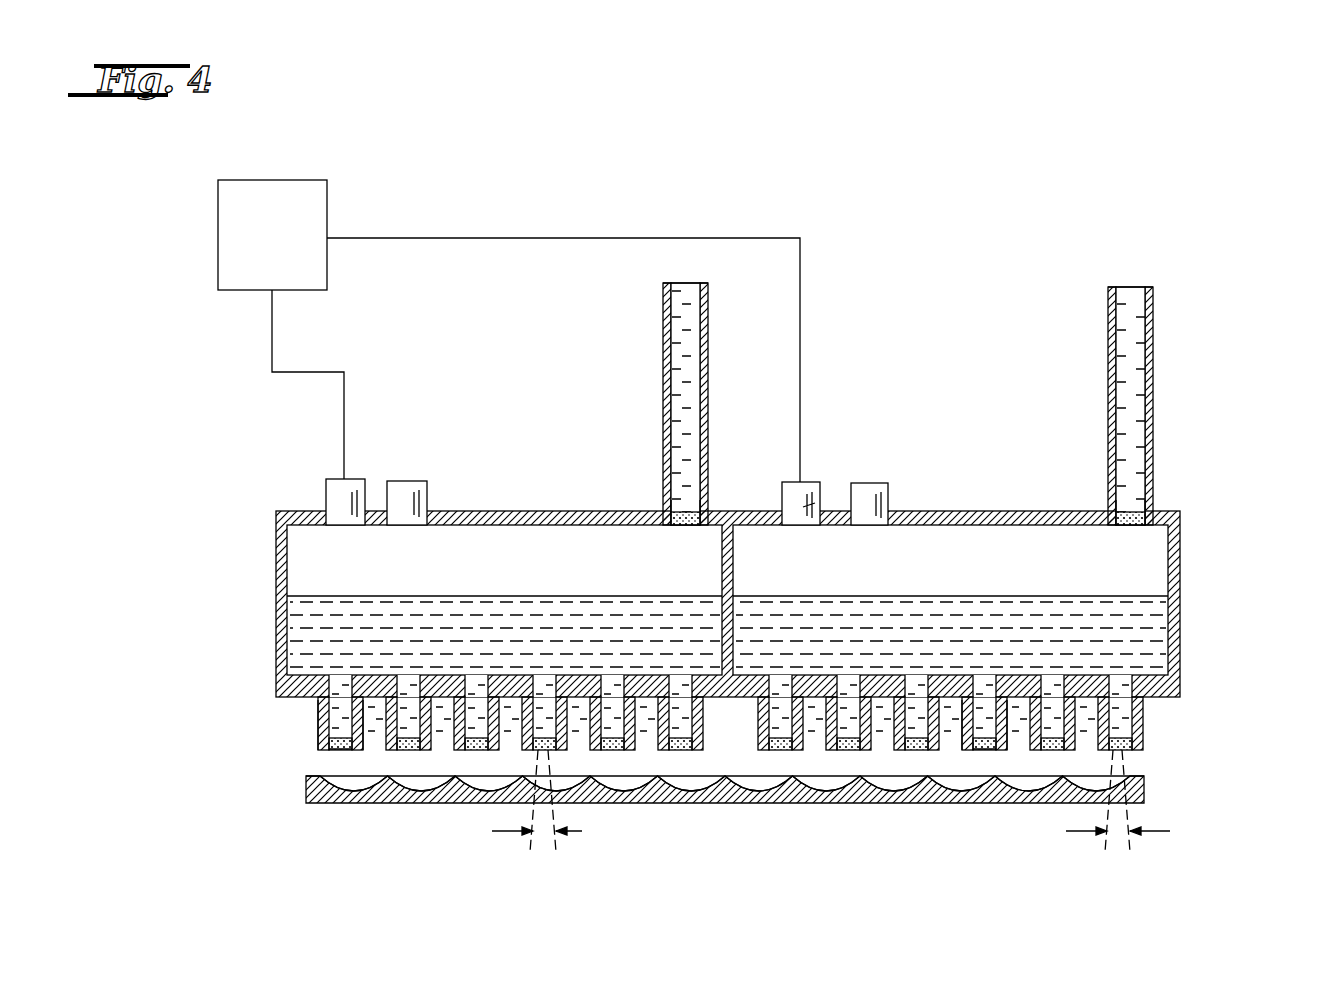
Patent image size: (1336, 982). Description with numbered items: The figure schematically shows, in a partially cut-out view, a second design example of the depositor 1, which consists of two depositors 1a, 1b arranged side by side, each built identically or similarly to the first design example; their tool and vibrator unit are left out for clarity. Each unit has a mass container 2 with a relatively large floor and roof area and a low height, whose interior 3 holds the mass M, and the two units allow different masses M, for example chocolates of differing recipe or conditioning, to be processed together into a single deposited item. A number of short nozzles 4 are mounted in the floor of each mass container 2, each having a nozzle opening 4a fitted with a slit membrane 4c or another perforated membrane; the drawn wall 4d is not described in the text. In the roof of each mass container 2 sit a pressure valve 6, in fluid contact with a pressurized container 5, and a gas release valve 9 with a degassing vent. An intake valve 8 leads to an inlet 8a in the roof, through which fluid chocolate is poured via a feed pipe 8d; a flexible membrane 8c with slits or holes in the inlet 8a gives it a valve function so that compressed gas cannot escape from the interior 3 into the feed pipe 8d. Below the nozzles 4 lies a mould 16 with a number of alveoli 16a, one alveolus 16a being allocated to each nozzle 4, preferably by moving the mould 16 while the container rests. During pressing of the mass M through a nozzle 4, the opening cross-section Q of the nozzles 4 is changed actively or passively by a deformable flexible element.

The depositor 1 is at (1335, 147).
The depositor 1a is at (998, 394).
The depositor 1b is at (188, 472).
The mass container 2 is at (276, 564).
The interior 3 is at (438, 576).
The nozzle 4 is at (316, 712).
The nozzle opening 4a is at (352, 755).
The slit membrane 4c is at (350, 737).
The side wall of cooling element 4d is at (335, 742).
The pressurized container 5 is at (245, 236).
The pressure valve 6 is at (340, 493).
The intake valve 8 is at (708, 498).
The inlet 8a is at (682, 532).
The flexible membrane 8c is at (668, 500).
The feed pipe 8d is at (668, 322).
The gas release valve 9 is at (406, 493).
The mould 16 is at (716, 806).
The alveolus 16a is at (766, 786).
The mass M is at (318, 642).
The opening cross-section Q is at (831, 810).